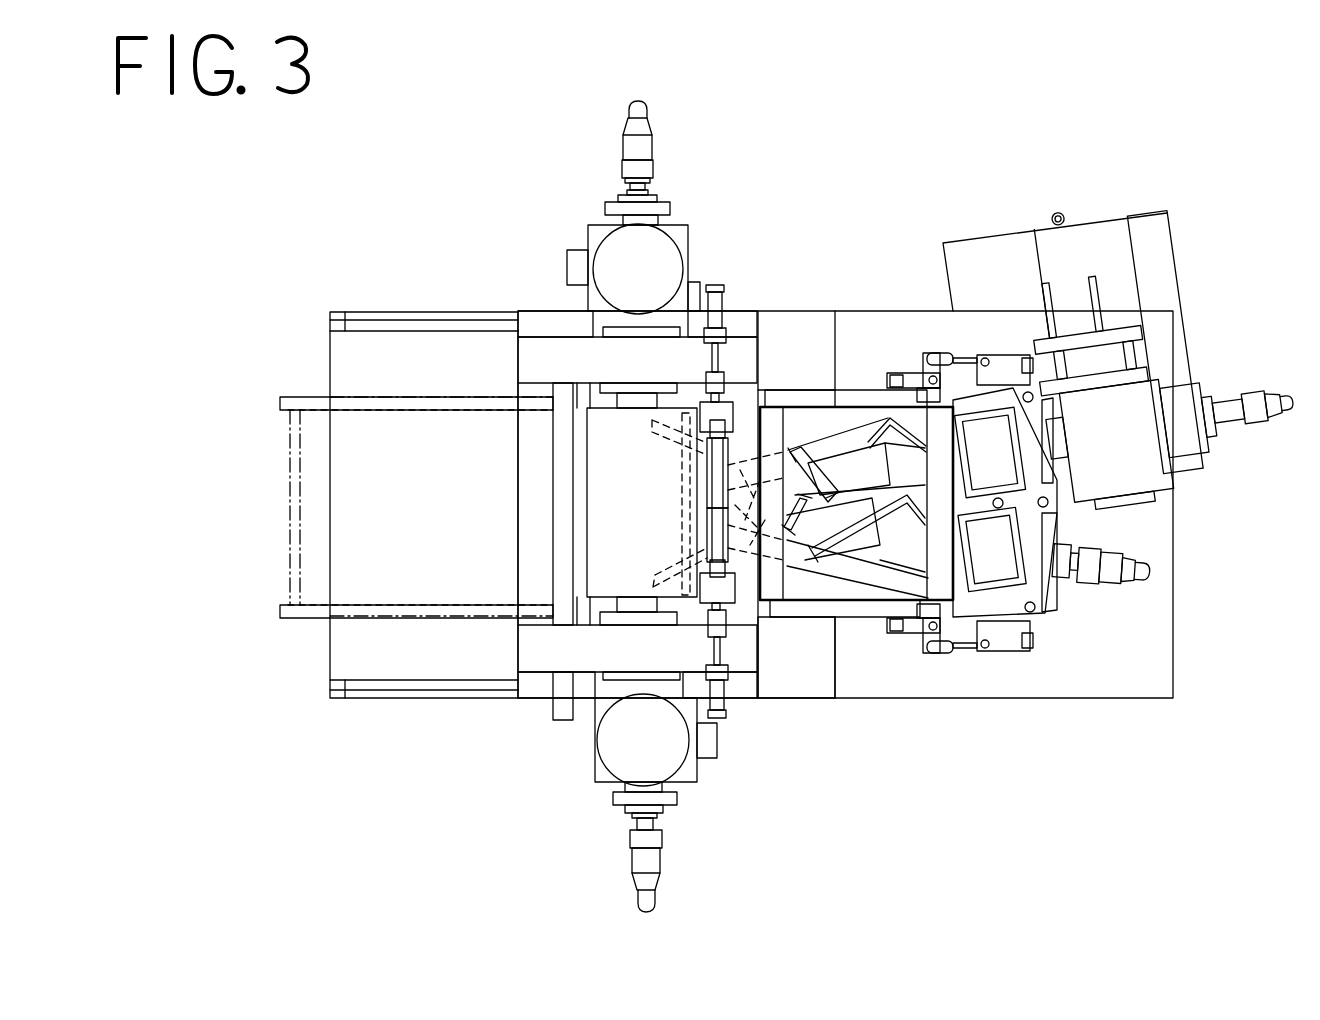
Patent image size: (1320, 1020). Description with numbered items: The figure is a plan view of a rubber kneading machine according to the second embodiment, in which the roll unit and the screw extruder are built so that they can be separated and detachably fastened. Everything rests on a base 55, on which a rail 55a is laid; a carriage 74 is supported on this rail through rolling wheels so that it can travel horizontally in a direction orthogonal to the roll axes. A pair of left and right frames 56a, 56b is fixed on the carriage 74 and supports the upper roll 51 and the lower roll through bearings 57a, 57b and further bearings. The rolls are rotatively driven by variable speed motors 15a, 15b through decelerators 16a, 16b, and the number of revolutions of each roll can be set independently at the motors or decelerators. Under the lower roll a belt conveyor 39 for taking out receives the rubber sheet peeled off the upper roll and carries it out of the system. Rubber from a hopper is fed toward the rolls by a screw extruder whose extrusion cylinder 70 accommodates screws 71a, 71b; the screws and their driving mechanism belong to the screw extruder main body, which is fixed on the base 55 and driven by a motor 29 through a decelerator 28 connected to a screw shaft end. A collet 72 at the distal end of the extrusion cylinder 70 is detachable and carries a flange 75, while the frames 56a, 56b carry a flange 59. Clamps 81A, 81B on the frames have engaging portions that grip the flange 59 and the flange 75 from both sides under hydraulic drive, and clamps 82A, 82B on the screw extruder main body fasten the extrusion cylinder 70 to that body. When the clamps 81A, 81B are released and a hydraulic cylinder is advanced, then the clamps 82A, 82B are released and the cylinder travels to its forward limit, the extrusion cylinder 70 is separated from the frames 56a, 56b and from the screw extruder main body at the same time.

The variable speed motor 15a is at (623, 763).
The variable speed motor 15b is at (618, 250).
The decelerator 16a is at (686, 778).
The decelerator 16b is at (682, 233).
The decelerator 28 is at (1150, 478).
The motor 29 is at (1078, 257).
The belt conveyor 39 is at (312, 395).
The upper roll 51 is at (598, 531).
The base 55 is at (328, 660).
The rail 55a is at (383, 328).
The frame 56a is at (573, 660).
The frame 56b is at (543, 350).
The bearing 57a is at (680, 678).
The bearing 57b is at (657, 328).
The flange 59 is at (703, 467).
The extrusion cylinder 70 is at (877, 612).
The screw 71a is at (875, 543).
The screw 71b is at (888, 442).
The collet 72 is at (853, 463).
The carriage 74 is at (540, 692).
The flange 75 is at (785, 600).
The clamp 81A is at (722, 672).
The clamp 81B is at (717, 332).
The clamp 82A is at (988, 655).
The clamp 82B is at (982, 352).